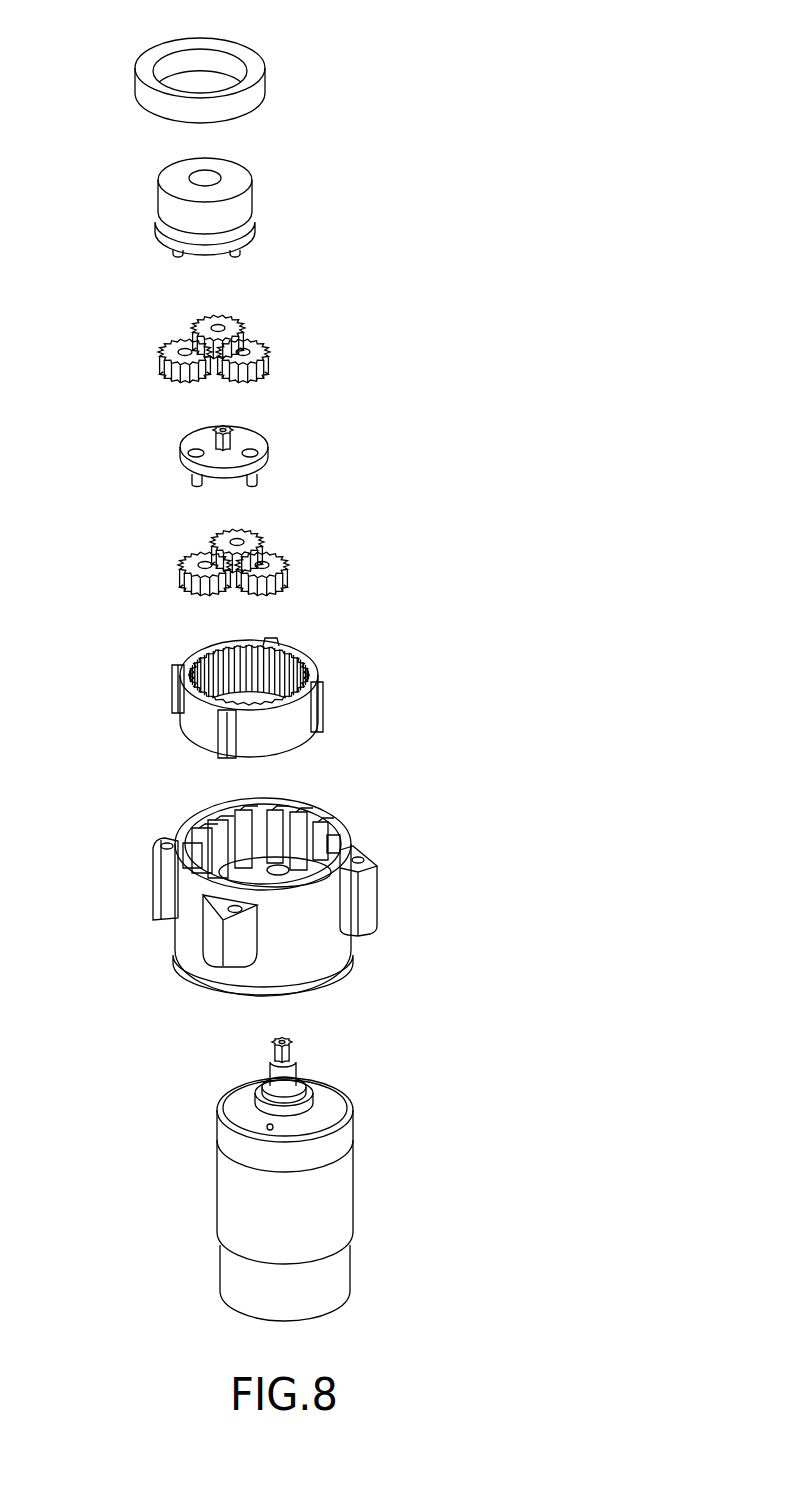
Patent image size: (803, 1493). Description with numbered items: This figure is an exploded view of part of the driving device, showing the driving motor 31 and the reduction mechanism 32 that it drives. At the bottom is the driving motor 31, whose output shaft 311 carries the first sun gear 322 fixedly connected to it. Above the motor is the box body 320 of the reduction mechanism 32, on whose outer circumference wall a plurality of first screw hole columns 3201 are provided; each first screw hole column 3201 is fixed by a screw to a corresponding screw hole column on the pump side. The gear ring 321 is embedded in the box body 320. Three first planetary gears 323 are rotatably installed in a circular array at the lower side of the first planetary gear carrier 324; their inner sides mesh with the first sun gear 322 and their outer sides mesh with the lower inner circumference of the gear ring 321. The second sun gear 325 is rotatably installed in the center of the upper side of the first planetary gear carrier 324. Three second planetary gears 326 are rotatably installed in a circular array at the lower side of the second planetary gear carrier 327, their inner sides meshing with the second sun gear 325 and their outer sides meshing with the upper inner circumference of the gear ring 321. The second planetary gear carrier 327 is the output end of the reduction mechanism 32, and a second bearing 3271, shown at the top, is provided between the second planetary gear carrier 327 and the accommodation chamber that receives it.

The reduction mechanism 32 is at (132, 220).
The second bearing 3271 is at (255, 77).
The second planetary gear carrier 327 is at (248, 198).
The second planetary gears 326 is at (255, 350).
The second sun gear 325 is at (226, 425).
The first planetary gear carrier 324 is at (267, 463).
The first planetary gears 323 is at (280, 560).
The gear ring 321 is at (310, 670).
The box body 320 is at (343, 828).
The first screw hole columns 3201 is at (365, 897).
The first sun gear 322 is at (283, 1037).
The output shaft 311 is at (288, 1087).
The driving motor 31 is at (340, 1192).